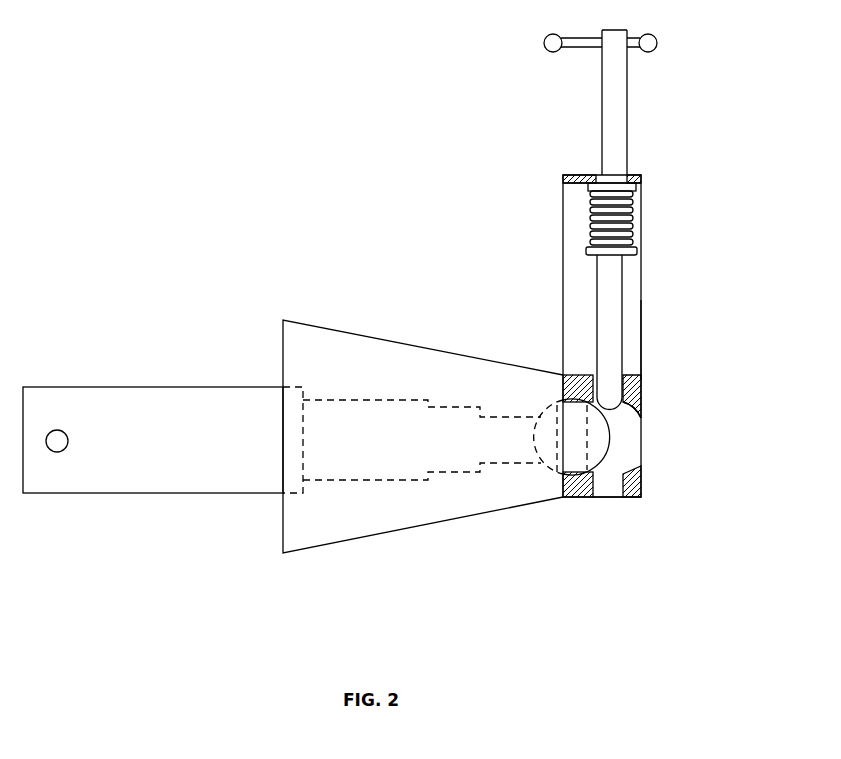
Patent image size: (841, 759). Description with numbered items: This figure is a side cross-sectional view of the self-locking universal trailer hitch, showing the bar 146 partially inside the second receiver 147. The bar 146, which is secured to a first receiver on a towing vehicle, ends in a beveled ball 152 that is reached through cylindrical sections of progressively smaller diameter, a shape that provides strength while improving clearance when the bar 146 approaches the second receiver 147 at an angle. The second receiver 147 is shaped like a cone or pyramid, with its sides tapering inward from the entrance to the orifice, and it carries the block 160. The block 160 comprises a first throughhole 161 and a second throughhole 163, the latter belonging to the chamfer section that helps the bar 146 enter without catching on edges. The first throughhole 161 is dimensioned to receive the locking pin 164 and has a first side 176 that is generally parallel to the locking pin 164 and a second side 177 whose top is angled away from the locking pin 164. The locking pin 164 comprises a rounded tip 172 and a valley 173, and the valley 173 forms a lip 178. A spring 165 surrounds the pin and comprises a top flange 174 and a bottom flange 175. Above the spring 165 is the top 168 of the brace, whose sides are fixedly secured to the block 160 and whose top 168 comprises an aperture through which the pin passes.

The bar 146 is at (190, 534).
The second receiver 147 is at (412, 293).
The beveled ball 152 is at (606, 437).
The block 160 is at (643, 402).
The first throughhole 161 is at (624, 376).
The second throughhole 163 is at (607, 490).
The locking pin 164 is at (605, 302).
The spring 165 is at (633, 215).
The top 168 is at (634, 182).
The rounded tip 172 is at (640, 416).
The valley 173 is at (608, 176).
The top flange 174 is at (642, 188).
The bottom flange 175 is at (637, 252).
The first side 176 is at (592, 372).
The second side 177 is at (643, 374).
The lip 178 is at (627, 176).